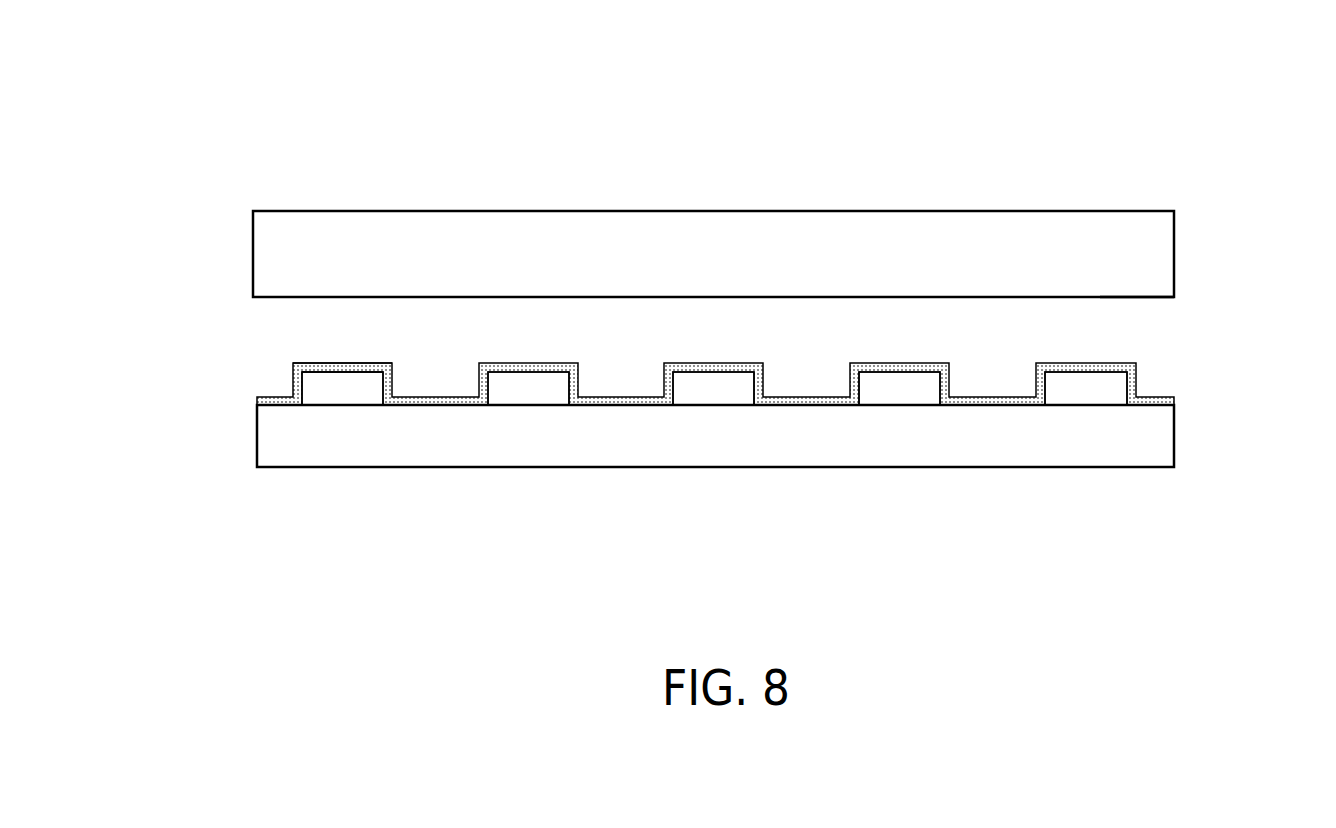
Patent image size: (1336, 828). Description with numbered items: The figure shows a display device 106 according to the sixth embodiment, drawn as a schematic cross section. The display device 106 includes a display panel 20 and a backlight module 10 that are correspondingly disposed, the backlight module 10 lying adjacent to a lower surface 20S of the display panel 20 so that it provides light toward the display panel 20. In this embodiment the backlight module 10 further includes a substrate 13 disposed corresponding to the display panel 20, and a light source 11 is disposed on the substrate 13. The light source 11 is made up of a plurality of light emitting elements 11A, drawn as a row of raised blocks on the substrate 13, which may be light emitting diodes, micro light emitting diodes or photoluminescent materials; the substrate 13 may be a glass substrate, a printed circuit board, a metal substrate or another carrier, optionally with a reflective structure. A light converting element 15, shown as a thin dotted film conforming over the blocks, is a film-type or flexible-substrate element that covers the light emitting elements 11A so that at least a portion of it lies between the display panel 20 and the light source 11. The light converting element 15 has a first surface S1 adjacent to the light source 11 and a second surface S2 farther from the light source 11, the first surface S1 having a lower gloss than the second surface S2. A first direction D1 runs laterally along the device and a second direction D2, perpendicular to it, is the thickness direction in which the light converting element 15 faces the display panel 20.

The display device 106 is at (1160, 93).
The display panel 20 is at (1150, 250).
The lower surface 20S is at (1155, 300).
The backlight module 10 is at (712, 459).
The substrate 13 is at (822, 442).
The light emitting element 11A is at (362, 397).
The light source 11 is at (720, 458).
The light converting element 15 is at (262, 400).
The first surface S1 is at (330, 375).
The second surface S2 is at (310, 362).
The first direction D1 is at (102, 572).
The second direction D2 is at (102, 572).